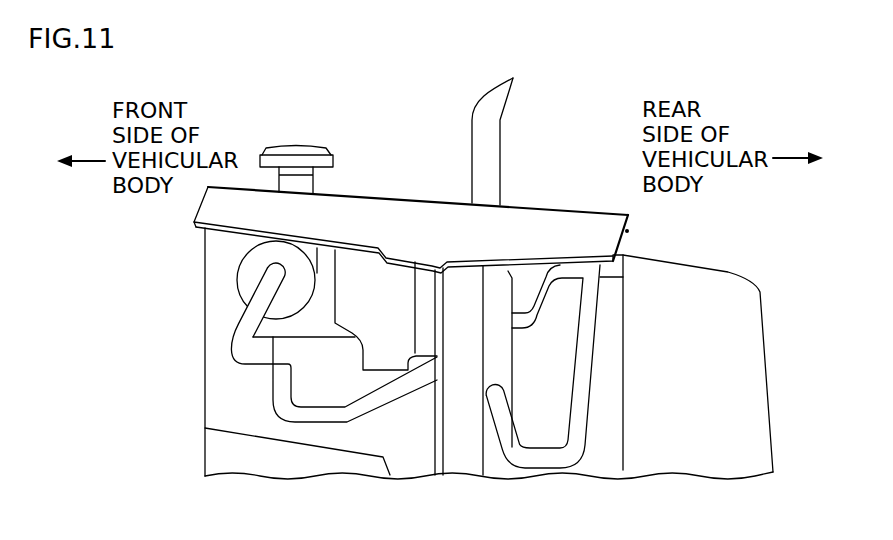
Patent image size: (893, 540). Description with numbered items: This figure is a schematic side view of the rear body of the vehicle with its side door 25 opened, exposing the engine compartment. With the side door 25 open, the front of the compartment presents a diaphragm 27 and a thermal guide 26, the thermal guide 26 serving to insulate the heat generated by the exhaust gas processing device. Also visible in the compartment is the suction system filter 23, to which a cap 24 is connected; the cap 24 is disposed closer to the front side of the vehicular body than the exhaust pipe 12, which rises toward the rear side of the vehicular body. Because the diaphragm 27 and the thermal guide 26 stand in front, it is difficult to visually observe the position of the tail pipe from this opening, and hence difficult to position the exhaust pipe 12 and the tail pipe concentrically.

The exhaust pipe 12 is at (490, 108).
The suction system filter 23 is at (253, 267).
The cap 24 is at (297, 160).
The side door 25 is at (560, 232).
The thermal guide 26 is at (366, 270).
The diaphragm 27 is at (462, 288).